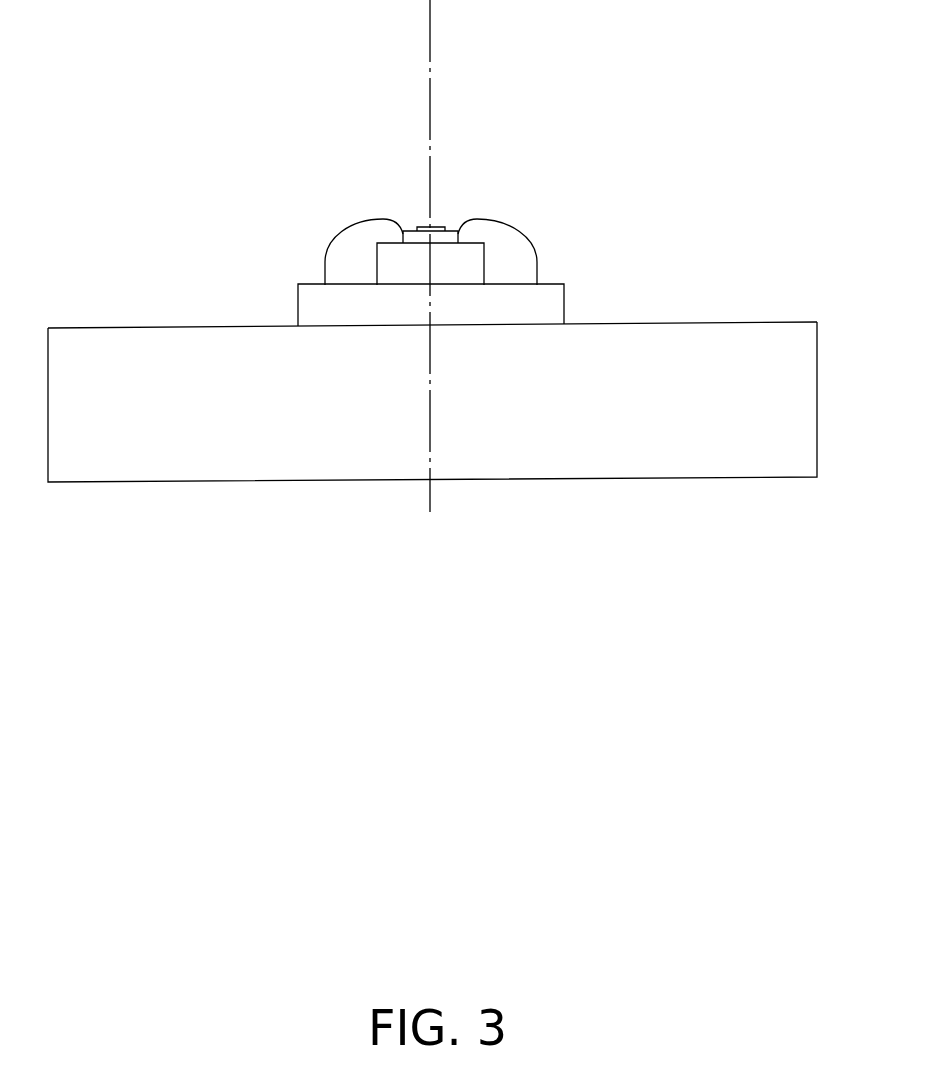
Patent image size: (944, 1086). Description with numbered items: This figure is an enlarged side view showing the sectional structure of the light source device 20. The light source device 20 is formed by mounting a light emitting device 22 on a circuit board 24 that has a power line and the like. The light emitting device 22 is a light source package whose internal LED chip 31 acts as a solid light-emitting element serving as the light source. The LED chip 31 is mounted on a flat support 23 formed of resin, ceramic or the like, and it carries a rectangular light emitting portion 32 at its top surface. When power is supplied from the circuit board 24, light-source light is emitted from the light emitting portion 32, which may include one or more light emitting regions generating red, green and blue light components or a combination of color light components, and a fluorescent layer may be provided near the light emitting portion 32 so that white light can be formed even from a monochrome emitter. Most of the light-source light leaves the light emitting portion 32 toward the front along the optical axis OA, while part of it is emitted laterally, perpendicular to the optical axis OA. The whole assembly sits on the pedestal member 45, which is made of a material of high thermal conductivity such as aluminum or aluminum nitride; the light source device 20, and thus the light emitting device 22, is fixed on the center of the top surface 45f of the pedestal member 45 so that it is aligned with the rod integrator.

The light source device 20 is at (471, 188).
The light emitting device 22 is at (420, 198).
The flat support 23 is at (385, 255).
The circuit board 24 is at (564, 303).
The LED chip 31 is at (452, 228).
The light emitting portion 32 is at (422, 227).
The pedestal member 45 is at (222, 326).
The top surface 45f is at (753, 322).
The optical axis OA is at (430, 23).